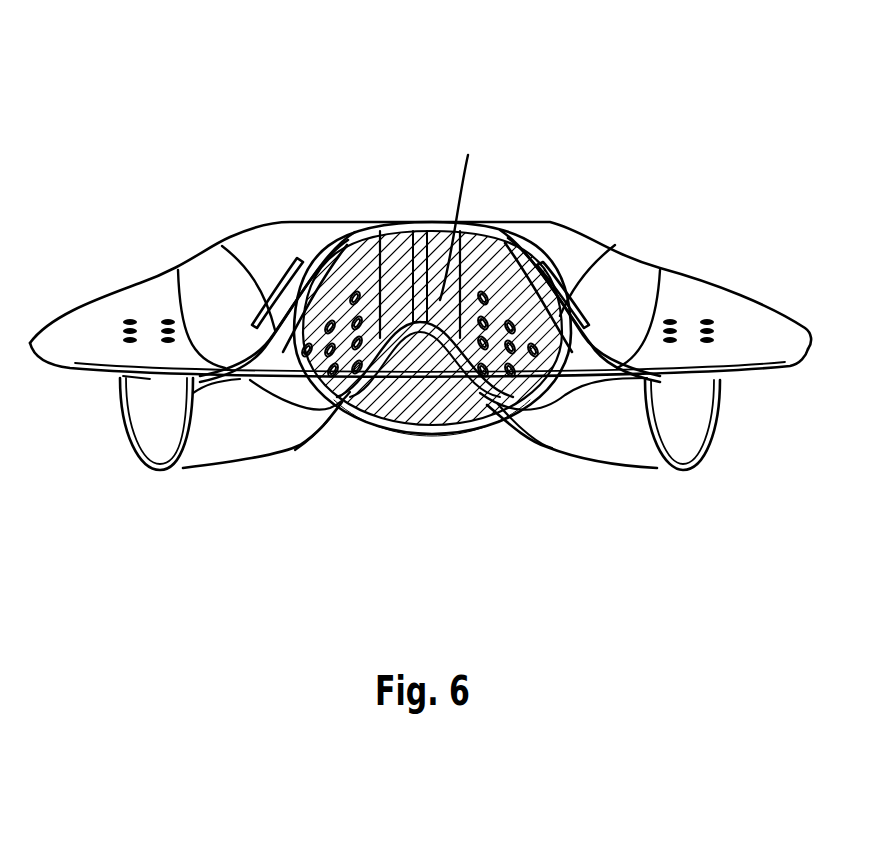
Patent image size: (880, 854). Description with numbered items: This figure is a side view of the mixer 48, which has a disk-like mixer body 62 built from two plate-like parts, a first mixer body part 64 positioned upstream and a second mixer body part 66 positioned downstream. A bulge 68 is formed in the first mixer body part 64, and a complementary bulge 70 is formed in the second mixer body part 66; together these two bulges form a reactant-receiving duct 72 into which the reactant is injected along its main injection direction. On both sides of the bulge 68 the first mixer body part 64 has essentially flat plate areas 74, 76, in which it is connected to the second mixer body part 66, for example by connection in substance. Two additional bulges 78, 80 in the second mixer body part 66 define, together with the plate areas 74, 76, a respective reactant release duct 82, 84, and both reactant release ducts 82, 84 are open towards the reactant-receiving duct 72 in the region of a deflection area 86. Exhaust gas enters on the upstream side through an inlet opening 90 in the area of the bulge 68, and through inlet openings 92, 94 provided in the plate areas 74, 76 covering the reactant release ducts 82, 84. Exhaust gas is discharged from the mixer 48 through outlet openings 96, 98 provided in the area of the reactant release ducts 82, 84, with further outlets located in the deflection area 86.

The mixer 48 is at (274, 198).
The mixer body 62 is at (367, 222).
The first mixer body part 64 is at (597, 240).
The second mixer body part 66 is at (334, 431).
The bulge 68 is at (420, 222).
The complementary bulge 70 is at (438, 434).
The reactant-receiving duct 72 is at (460, 400).
The flat plate area 74 is at (80, 323).
The flat plate area 76 is at (750, 320).
The additional bulge 78 is at (230, 466).
The additional bulge 80 is at (652, 468).
The reactant release duct 82 is at (141, 426).
The reactant release duct 84 is at (705, 397).
The deflection area 86 is at (470, 221).
The inlet opening 90 is at (247, 360).
The inlet opening 92 is at (130, 317).
The inlet opening 94 is at (710, 317).
The outlet opening 96 is at (170, 445).
The outlet opening 98 is at (690, 435).